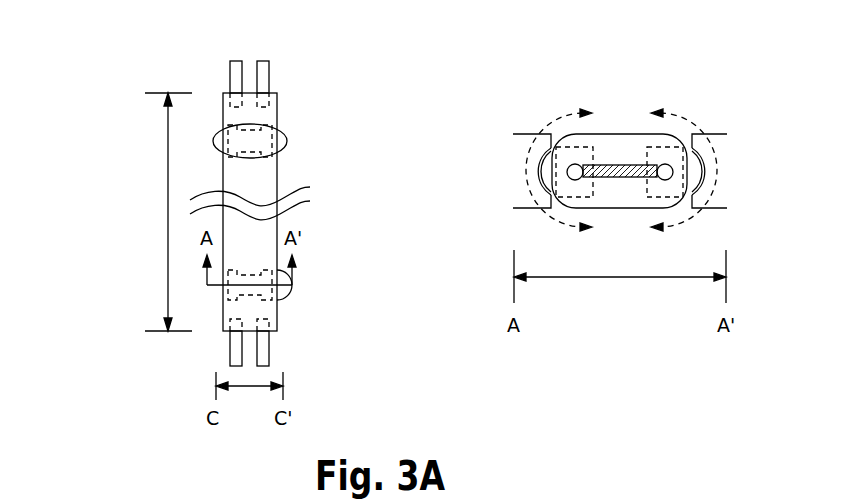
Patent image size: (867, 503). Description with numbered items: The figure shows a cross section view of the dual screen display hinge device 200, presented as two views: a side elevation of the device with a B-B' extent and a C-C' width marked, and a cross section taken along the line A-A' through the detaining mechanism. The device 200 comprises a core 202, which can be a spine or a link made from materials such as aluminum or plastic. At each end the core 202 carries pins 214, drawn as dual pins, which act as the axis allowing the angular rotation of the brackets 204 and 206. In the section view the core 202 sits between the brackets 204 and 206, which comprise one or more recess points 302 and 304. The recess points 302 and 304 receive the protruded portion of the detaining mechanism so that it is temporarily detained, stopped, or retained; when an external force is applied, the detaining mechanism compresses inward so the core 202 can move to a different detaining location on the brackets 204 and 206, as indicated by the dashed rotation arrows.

The dual screen display hinge device 200 is at (53, 18).
The core 202 is at (268, 183).
The bracket 204 is at (541, 133).
The bracket 206 is at (710, 134).
The pins 214 is at (268, 73).
The recess point 302 is at (540, 173).
The recess point 304 is at (705, 175).